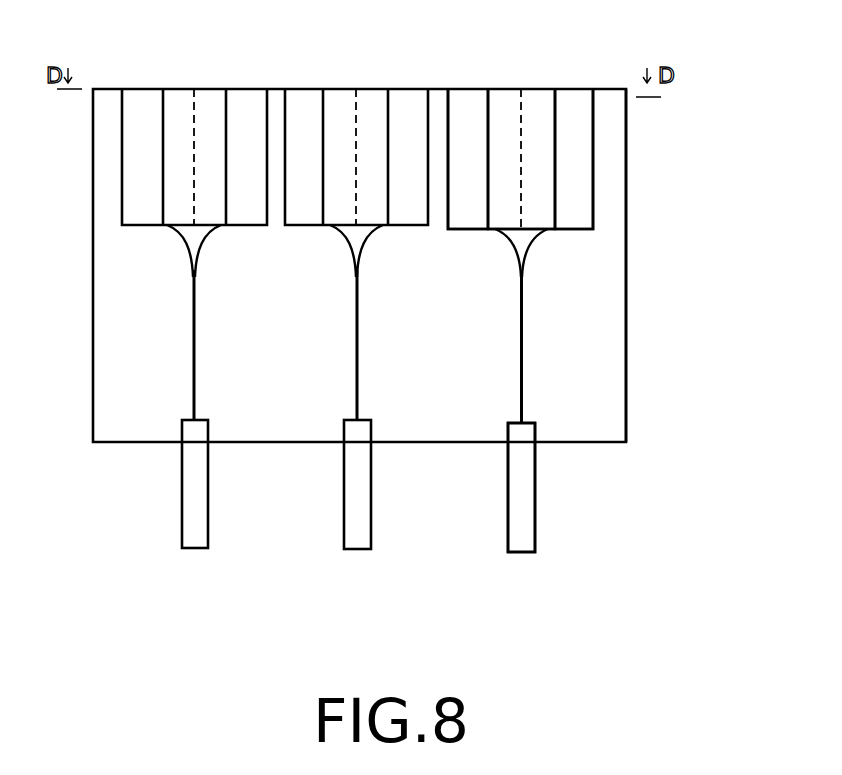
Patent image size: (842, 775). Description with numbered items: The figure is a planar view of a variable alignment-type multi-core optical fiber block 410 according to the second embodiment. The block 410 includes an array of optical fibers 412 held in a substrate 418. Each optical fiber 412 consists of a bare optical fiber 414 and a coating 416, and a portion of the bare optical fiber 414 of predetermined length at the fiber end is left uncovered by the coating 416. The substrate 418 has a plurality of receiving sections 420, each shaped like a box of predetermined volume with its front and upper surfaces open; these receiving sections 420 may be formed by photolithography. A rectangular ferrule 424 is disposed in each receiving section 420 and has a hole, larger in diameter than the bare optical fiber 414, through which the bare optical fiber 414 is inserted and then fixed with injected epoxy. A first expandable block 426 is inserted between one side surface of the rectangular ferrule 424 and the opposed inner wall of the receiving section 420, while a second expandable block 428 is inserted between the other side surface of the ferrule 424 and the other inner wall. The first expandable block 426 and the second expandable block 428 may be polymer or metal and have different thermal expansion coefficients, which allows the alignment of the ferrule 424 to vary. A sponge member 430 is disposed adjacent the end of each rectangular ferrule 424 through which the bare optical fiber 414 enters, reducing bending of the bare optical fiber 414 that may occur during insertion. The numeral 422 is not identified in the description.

The multi-core optical fiber block 410 is at (378, 599).
The optical fiber 412 is at (500, 500).
The bare optical fiber 414 is at (523, 377).
The coating 416 is at (528, 515).
The substrate 418 is at (632, 222).
The receiving section 420 is at (594, 173).
The funnel branch 422 is at (532, 250).
The rectangular ferrule 424 is at (530, 103).
The first expandable block 426 is at (458, 105).
The second expandable block 428 is at (583, 102).
The sponge member 430 is at (513, 240).